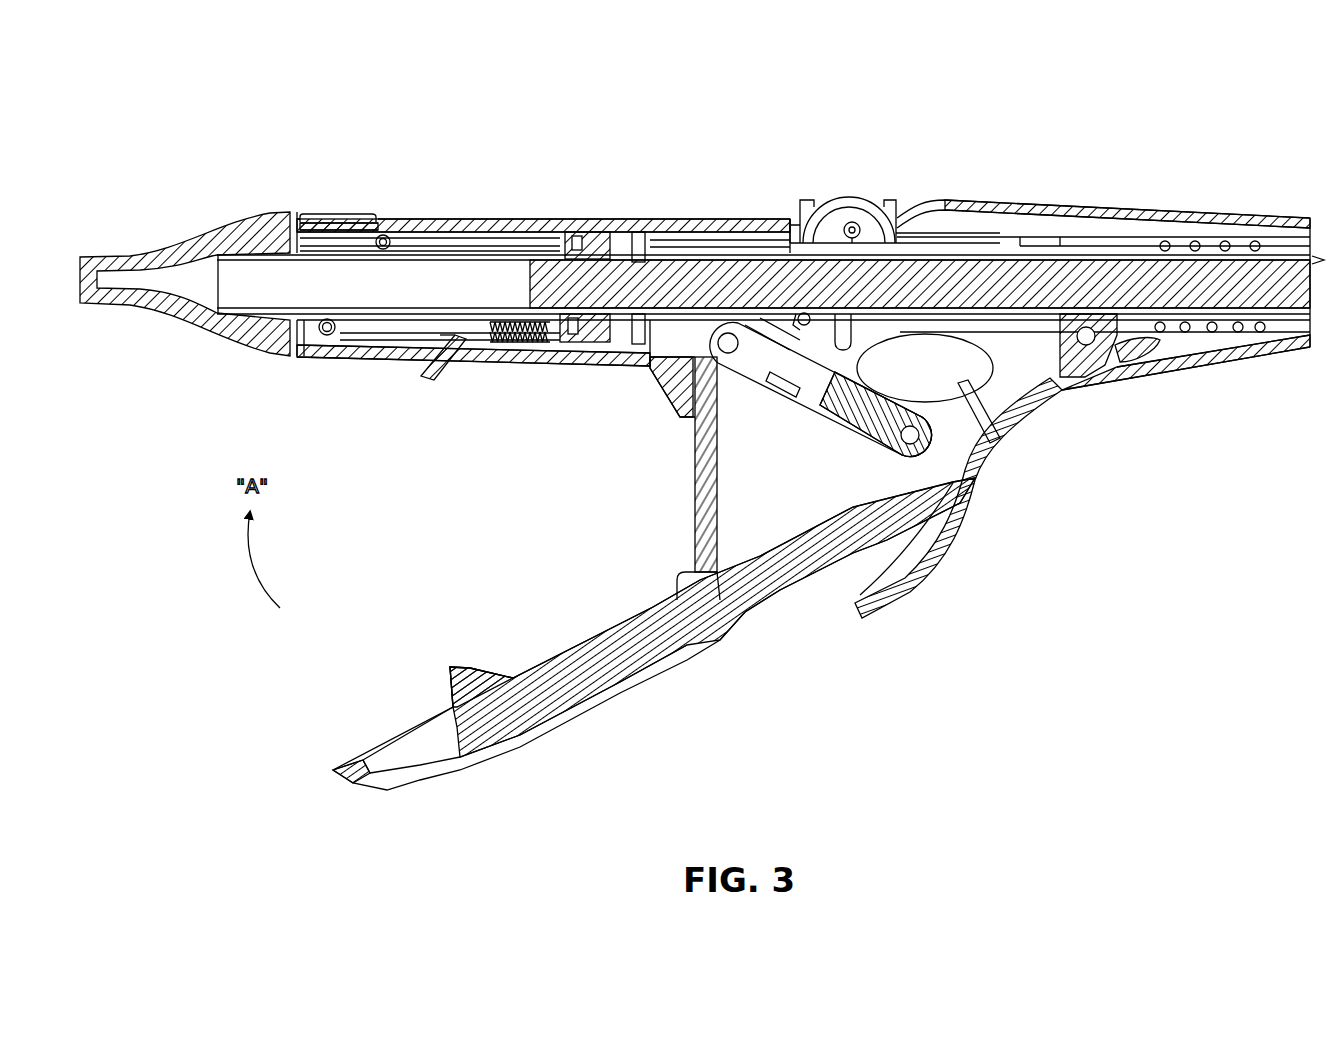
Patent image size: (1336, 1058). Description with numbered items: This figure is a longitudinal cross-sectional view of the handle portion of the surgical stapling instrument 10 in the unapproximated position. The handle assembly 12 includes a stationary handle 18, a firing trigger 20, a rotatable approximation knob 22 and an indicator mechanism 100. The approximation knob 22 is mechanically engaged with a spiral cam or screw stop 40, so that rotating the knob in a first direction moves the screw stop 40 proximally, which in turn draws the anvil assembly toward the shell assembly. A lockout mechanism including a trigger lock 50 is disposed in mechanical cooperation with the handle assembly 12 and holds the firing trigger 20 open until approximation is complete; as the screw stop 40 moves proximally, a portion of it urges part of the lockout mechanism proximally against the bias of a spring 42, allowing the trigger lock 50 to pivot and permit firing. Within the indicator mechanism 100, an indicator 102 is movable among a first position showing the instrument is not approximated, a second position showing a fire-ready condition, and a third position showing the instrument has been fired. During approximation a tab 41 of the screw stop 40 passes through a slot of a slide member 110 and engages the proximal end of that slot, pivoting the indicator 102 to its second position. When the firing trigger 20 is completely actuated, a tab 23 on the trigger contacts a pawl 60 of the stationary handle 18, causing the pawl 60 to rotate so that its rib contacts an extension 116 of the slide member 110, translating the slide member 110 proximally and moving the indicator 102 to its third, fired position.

The surgical stapling instrument 10 is at (611, 116).
The handle assembly 12 is at (408, 180).
The stationary handle 18 is at (348, 214).
The firing trigger 20 is at (500, 760).
The rotatable approximation knob 22 is at (160, 252).
The tab 23 is at (448, 668).
The screw stop 40 is at (566, 258).
The tab 41 is at (1015, 240).
The spring 42 is at (530, 345).
The trigger lock 50 is at (692, 498).
The pawl 60 is at (433, 376).
The indicator mechanism 100 is at (864, 108).
The indicator 102 is at (862, 198).
The slide member 110 is at (765, 216).
The extension 116 is at (433, 225).